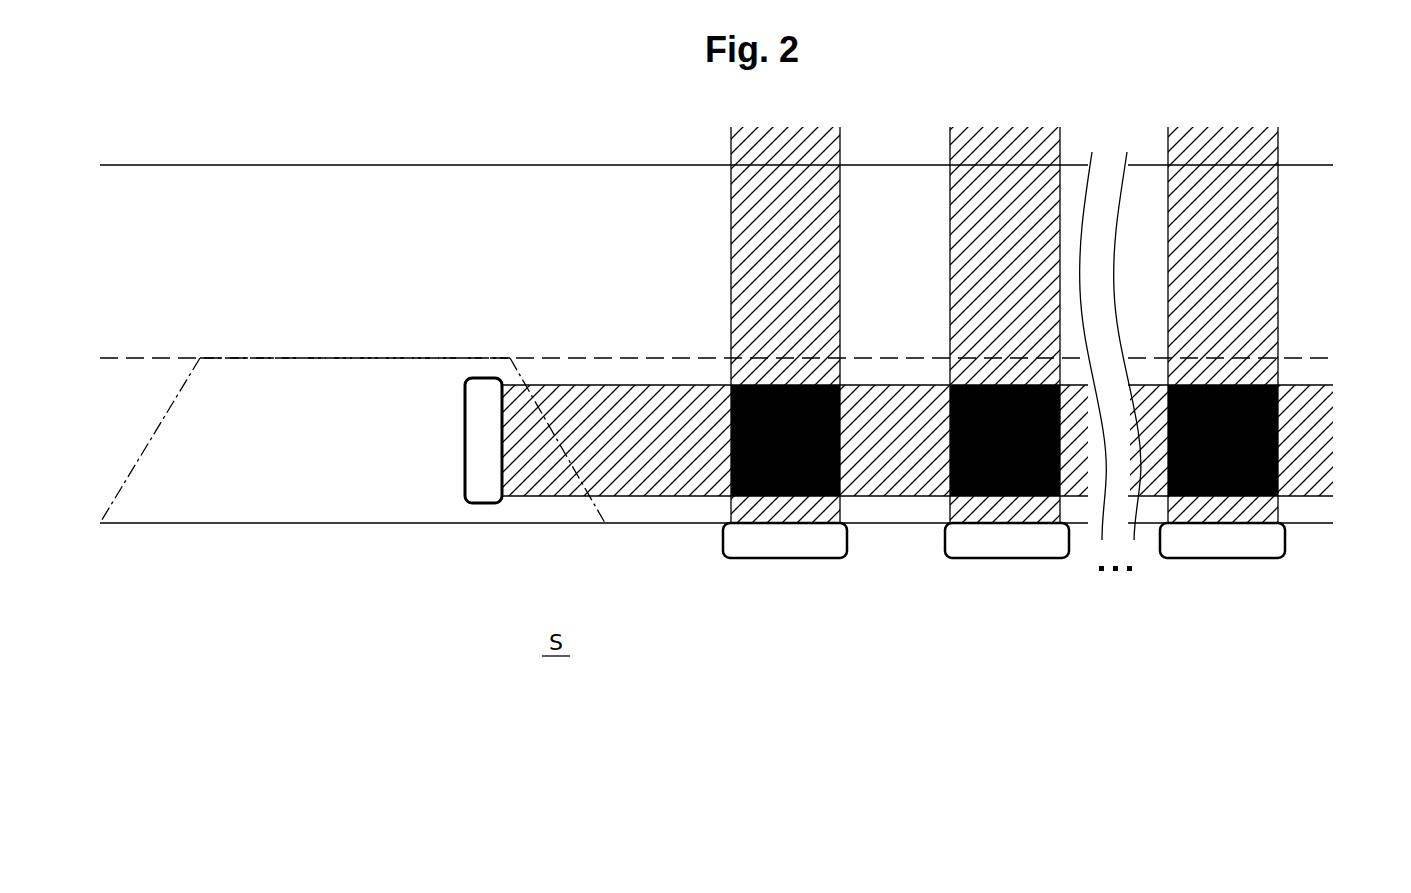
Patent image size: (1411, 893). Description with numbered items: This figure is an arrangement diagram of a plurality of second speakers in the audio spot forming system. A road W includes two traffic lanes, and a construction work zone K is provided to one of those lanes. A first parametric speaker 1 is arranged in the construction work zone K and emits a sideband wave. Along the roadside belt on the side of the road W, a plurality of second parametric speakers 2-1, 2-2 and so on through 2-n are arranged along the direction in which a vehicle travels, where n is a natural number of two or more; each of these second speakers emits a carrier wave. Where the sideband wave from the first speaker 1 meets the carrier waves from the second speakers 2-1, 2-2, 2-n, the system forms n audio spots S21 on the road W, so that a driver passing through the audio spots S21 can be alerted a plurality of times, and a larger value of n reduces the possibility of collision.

The road W is at (392, 192).
The construction work zone K is at (322, 467).
The first parametric speaker 1 is at (478, 447).
The second parametric speaker 2-1 is at (788, 548).
The second parametric speaker 2-2 is at (1006, 548).
The second parametric speaker 2-n is at (1230, 548).
The audio spot S21 is at (950, 415).